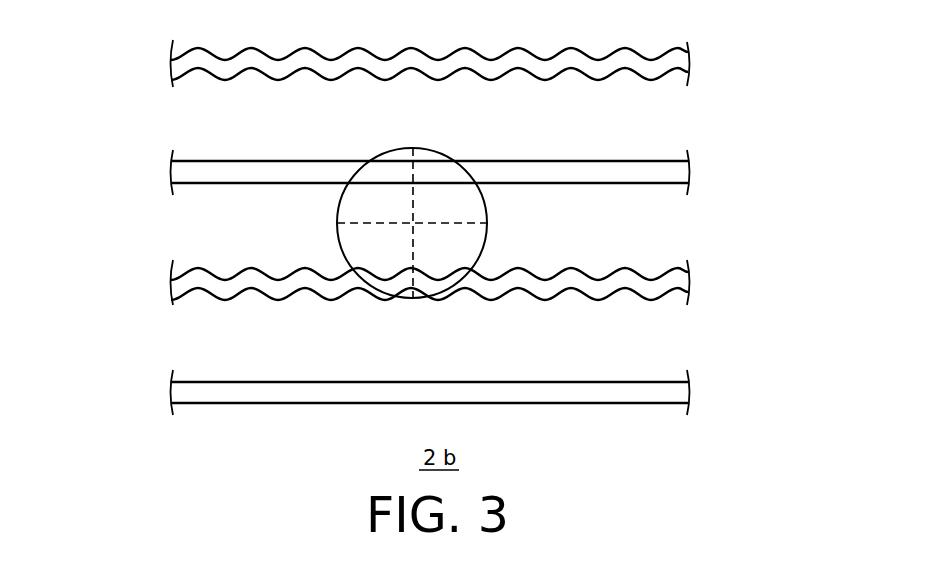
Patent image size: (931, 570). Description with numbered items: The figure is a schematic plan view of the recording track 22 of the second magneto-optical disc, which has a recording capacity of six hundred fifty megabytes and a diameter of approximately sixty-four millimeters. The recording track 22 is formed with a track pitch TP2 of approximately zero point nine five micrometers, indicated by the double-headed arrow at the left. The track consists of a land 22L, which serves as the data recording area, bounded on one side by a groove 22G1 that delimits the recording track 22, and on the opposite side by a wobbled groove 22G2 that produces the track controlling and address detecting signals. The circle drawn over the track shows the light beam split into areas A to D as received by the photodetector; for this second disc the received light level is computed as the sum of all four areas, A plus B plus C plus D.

The recording track 22 is at (493, 227).
The groove 22G1 is at (673, 172).
The wobbled groove 22G2 is at (680, 278).
The land 22L is at (670, 224).
The track pitch TP2 is at (95, 175).